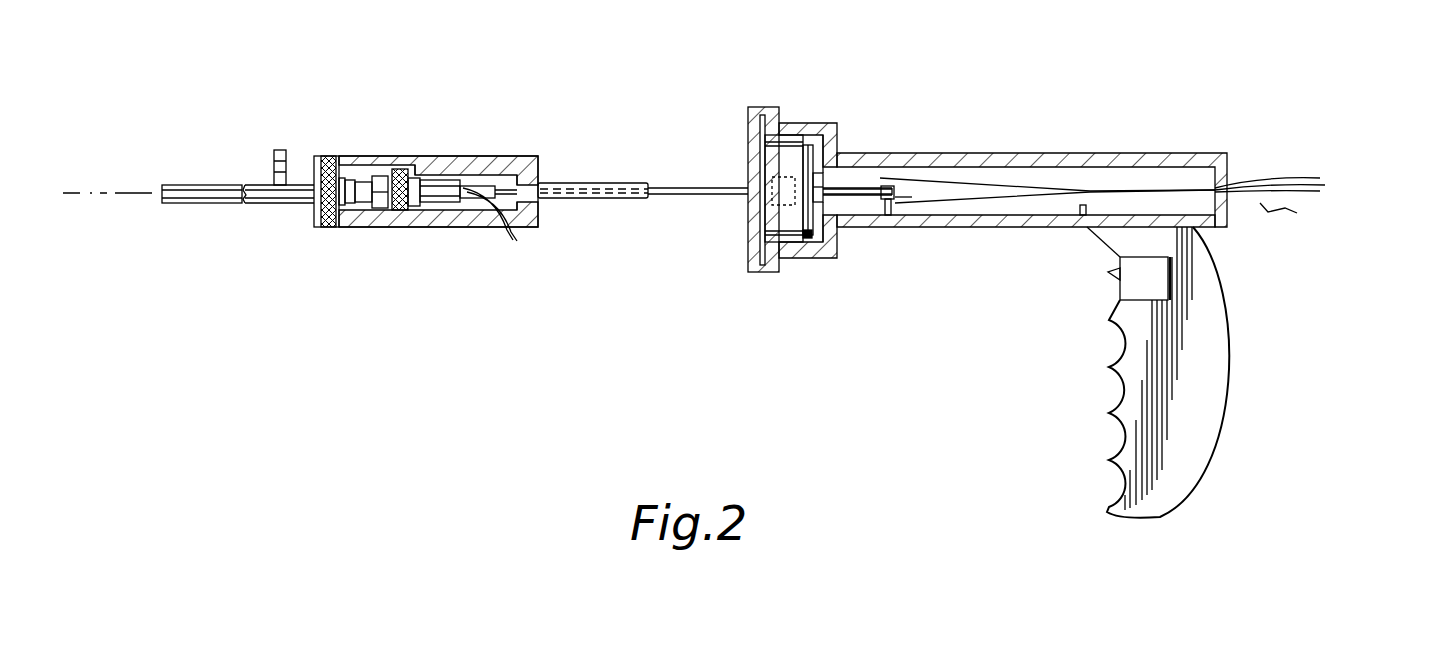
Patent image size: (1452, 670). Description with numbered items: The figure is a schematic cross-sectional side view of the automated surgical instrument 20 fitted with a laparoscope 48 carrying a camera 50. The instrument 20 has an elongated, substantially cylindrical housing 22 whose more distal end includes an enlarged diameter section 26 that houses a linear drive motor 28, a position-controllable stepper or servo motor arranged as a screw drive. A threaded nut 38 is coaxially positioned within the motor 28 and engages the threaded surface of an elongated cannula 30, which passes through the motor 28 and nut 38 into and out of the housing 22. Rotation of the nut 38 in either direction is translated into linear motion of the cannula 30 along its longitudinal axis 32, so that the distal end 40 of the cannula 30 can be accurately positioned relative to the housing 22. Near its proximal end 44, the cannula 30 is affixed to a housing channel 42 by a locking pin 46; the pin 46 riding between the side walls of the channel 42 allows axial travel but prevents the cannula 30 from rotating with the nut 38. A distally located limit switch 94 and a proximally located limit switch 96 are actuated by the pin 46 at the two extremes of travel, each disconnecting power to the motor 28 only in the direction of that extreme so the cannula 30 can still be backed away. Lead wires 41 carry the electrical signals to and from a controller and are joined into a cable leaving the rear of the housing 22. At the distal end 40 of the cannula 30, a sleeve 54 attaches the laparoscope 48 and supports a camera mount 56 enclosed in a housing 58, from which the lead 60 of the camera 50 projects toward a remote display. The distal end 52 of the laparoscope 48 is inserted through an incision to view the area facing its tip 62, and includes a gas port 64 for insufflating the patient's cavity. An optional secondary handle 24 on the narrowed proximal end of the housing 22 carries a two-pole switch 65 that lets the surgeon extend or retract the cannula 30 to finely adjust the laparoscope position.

The automated surgical instrument 20 is at (918, 120).
The housing 22 is at (1130, 153).
The secondary handle 24 is at (1107, 457).
The enlarged diameter section 26 is at (787, 272).
The linear drive motor 28 is at (815, 248).
The cannula 30 is at (678, 181).
The longitudinal axis 32 is at (135, 196).
The threaded nut 38 is at (784, 178).
The distal end of the cannula 40 is at (648, 183).
The lead wires 41 is at (1170, 187).
The housing channel 42 is at (990, 218).
The proximal end of the cannula 44 is at (865, 185).
The locking pin 46 is at (913, 203).
The laparoscope 48 is at (320, 138).
The camera 50 is at (385, 212).
The distal end of the laparoscope 52 is at (213, 203).
The sleeve 54 is at (648, 200).
The camera mount 56 is at (328, 227).
The housing 58 is at (465, 227).
The lead 60 is at (515, 241).
The tip 62 is at (150, 190).
The gas port 64 is at (280, 150).
The switch 65 is at (1108, 278).
The distal limit switch 94 is at (870, 213).
The proximal limit switch 96 is at (1082, 223).